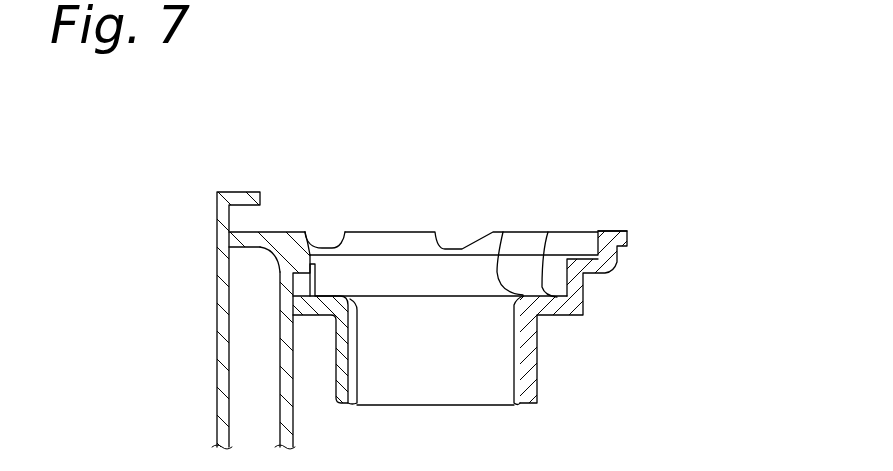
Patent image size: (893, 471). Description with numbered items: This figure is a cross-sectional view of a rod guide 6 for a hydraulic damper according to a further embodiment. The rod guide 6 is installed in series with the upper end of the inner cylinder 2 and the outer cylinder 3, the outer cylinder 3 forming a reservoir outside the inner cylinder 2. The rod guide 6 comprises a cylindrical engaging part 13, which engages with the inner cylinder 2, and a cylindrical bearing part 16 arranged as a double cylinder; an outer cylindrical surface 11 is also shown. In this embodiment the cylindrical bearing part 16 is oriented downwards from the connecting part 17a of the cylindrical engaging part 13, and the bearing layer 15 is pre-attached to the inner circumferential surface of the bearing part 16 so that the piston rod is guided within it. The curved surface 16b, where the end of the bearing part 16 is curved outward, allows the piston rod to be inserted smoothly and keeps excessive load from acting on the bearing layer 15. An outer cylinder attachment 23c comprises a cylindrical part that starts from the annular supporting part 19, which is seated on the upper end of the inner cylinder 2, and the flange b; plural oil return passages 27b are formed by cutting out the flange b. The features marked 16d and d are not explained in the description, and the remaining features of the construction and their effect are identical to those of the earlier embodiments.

The inner cylinder 2 is at (275, 392).
The outer cylinder 3 is at (217, 349).
The rod guide 6 is at (543, 360).
The outer cylindrical surface 11 is at (587, 285).
The cylindrical engaging part 13 is at (308, 262).
The bearing layer 15 is at (365, 337).
The cylindrical bearing part 16 is at (334, 345).
The curved surface 16b is at (503, 232).
The bottom liner portion 16d is at (530, 408).
The connecting part 17a is at (548, 232).
The annular supporting part 19 is at (293, 250).
The outer cylinder attachment 23c is at (271, 224).
The oil return passages 27b is at (318, 248).
The flange b is at (246, 231).
The dimension d is at (275, 256).